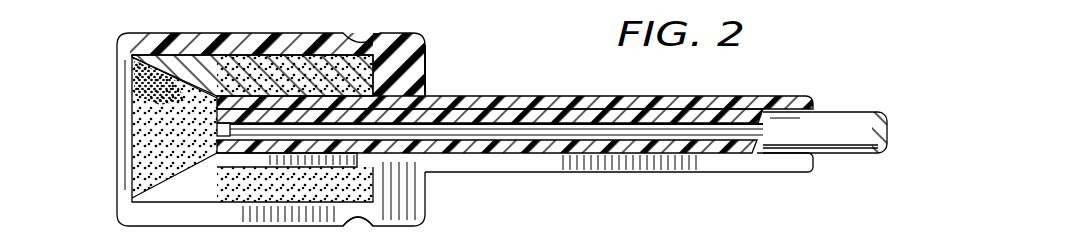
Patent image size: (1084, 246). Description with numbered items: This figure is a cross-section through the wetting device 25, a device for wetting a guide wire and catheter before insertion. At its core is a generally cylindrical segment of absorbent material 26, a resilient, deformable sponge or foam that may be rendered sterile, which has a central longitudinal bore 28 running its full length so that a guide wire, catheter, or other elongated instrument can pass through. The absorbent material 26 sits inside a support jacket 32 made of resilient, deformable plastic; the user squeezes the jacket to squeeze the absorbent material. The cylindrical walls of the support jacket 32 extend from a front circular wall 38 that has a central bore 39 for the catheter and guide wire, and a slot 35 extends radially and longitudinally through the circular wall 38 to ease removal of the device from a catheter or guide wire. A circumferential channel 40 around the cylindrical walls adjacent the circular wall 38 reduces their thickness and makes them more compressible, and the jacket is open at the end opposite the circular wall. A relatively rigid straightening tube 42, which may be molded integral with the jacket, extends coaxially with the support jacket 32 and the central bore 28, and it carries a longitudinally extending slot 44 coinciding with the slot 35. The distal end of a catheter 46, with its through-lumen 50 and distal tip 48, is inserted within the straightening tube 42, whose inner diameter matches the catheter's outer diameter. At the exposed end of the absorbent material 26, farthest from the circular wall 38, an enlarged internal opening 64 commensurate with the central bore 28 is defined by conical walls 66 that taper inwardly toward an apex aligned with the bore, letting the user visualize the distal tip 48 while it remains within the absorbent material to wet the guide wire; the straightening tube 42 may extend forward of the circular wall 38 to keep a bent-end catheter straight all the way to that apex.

The wetting device 25 is at (436, 48).
The absorbent material 26 is at (283, 70).
The central longitudinal bore 28 is at (247, 90).
The support jacket 32 is at (390, 43).
The slot 35 is at (142, 215).
The front circular wall 38 is at (427, 74).
The central bore 39 is at (425, 200).
The circumferential channel 40 is at (363, 218).
The straightening tube 42 is at (570, 103).
The longitudinally extending slot 44 is at (517, 163).
The catheter 46 is at (833, 113).
The distal tip 48 is at (217, 132).
The through-lumen 50 is at (615, 130).
The enlarged internal opening 64 is at (146, 118).
The conical walls 66 is at (143, 72).